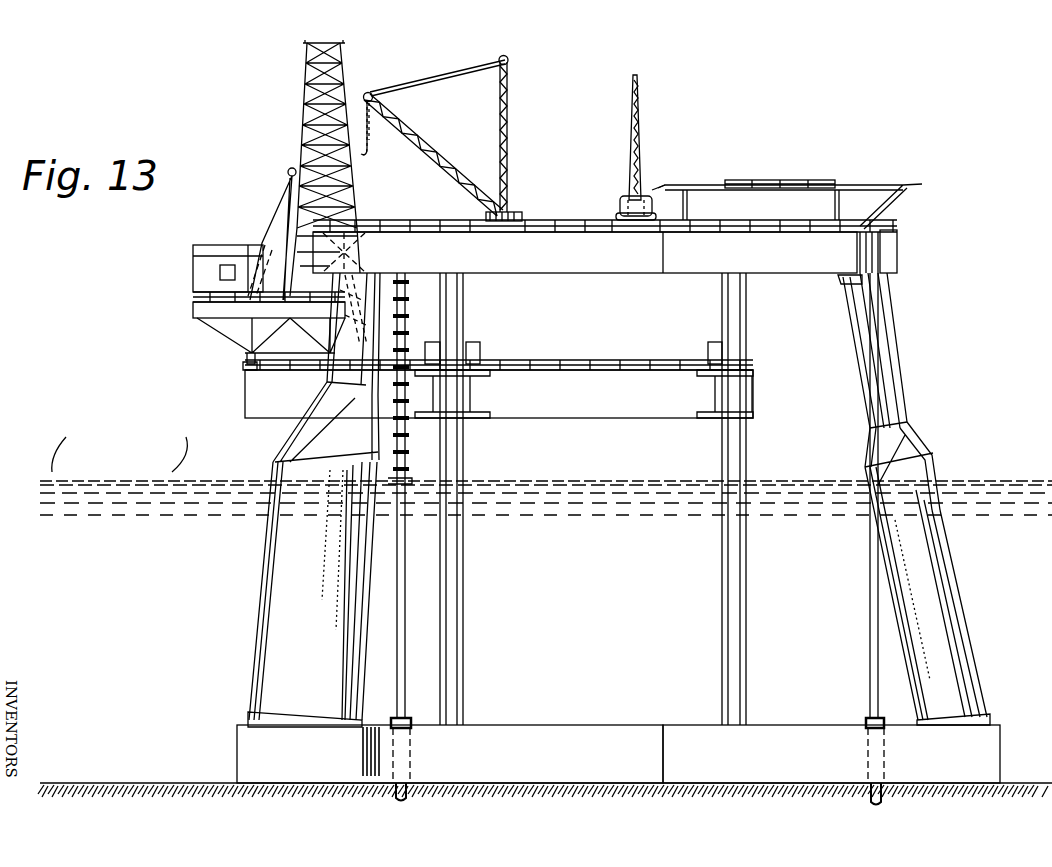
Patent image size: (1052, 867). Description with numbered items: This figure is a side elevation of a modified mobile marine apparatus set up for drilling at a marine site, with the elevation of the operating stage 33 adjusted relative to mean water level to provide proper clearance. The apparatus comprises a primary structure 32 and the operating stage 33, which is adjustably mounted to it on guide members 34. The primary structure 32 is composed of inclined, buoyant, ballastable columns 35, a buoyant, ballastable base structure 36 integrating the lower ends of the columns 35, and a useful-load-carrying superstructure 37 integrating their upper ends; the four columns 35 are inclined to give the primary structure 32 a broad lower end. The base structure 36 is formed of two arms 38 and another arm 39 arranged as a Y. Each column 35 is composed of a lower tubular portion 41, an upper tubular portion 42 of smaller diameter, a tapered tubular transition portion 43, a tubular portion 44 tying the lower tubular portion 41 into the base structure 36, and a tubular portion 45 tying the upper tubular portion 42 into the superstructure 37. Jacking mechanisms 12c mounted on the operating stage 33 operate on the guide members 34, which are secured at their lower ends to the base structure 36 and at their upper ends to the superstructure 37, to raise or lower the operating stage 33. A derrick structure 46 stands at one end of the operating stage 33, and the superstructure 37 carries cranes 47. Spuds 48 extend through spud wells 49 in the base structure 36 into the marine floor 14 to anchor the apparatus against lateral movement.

The jacking mechanism 12c is at (433, 344).
The marine floor 14 is at (146, 782).
The primary structure 32 is at (619, 478).
The operating stage 33 is at (498, 389).
The guide member 34 is at (464, 568).
The column 35 is at (246, 469).
The base structure 36 is at (620, 733).
The useful-load-carrying superstructure 37 is at (617, 226).
The arm 38 is at (246, 758).
The arm 39 is at (1000, 758).
The lower tubular portion 41 is at (270, 603).
The upper tubular portion 42 is at (330, 340).
The tapered tubular transition portion 43 is at (283, 456).
The tubular portion 44 is at (250, 722).
The tubular portion 45 is at (838, 279).
The derrick structure 46 is at (303, 122).
The crane 47 is at (500, 123).
The spud 48 is at (405, 622).
The spud well 49 is at (407, 720).